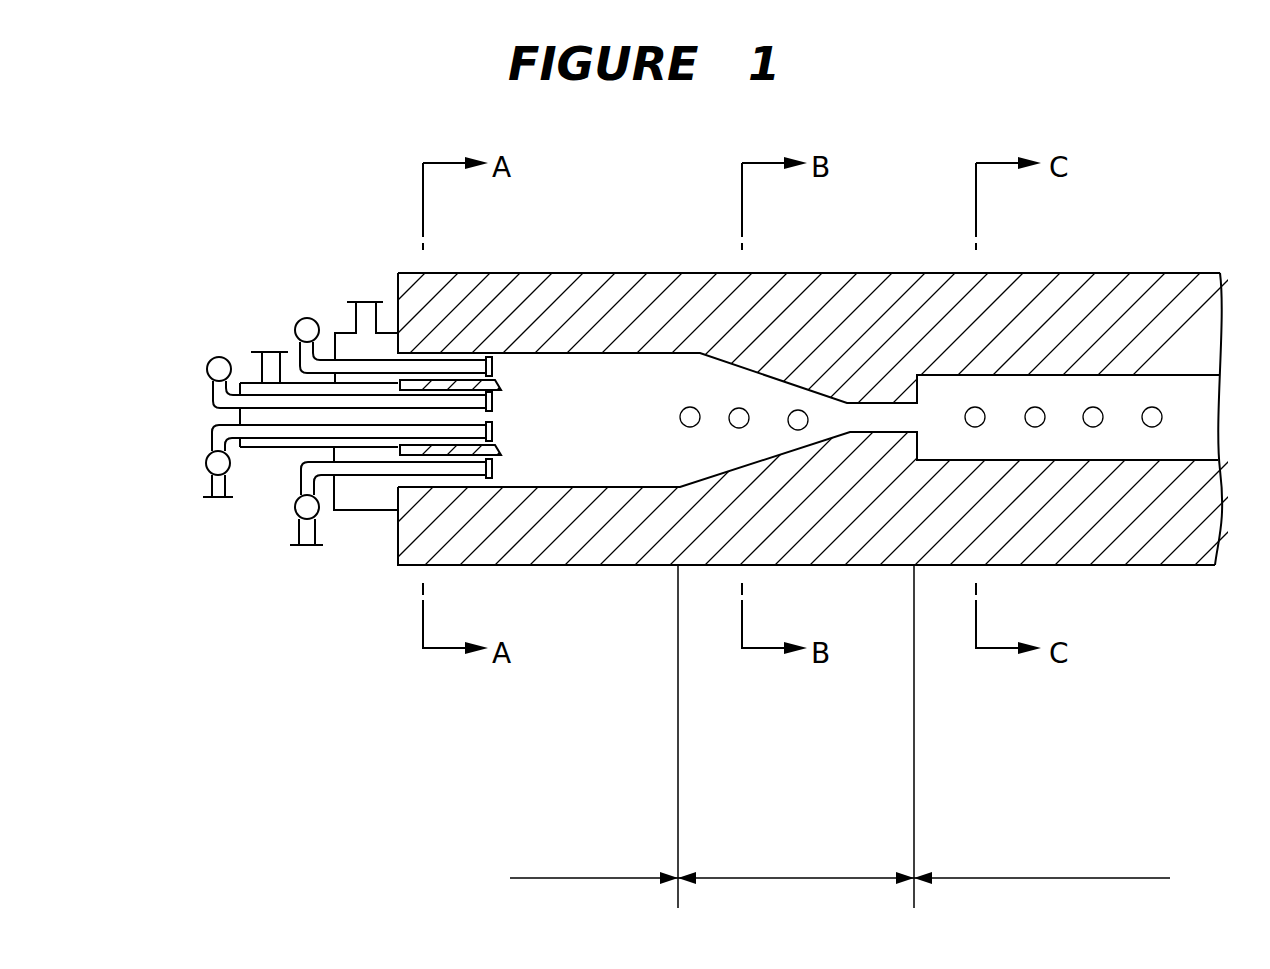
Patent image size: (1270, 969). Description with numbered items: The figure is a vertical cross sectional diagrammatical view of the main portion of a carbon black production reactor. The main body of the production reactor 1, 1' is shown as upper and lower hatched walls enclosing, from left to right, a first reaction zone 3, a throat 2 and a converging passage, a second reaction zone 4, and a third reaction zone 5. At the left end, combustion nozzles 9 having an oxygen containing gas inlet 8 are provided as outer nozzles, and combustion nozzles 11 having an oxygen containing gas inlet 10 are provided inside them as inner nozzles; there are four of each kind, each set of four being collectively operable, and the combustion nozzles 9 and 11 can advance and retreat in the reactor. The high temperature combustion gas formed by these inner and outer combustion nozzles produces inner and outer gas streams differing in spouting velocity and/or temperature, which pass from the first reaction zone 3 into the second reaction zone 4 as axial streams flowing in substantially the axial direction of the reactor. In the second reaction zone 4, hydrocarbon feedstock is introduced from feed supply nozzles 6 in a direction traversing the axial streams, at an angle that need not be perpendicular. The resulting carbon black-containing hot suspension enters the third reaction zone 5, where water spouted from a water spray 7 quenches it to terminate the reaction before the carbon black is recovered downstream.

The main body of the production reactor 1 is at (760, 391).
The main body of the production reactor 1' is at (811, 520).
The throat 2 is at (913, 420).
The first reaction zone 3 is at (594, 863).
The second reaction zone 4 is at (796, 863).
The third reaction zone 5 is at (1042, 863).
The feed supply nozzles 6 is at (847, 403).
The water spray 7 is at (1152, 407).
The oxygen containing gas inlet 8 is at (365, 300).
The combustion nozzles 9 is at (310, 318).
The oxygen containing gas inlet 10 is at (268, 351).
The combustion nozzles 11 is at (208, 367).